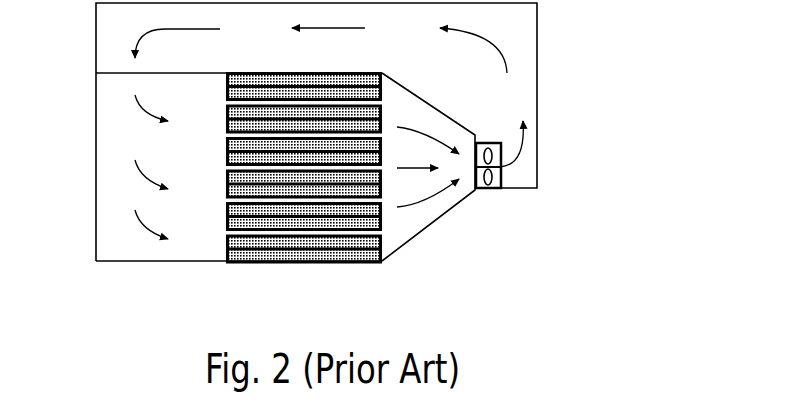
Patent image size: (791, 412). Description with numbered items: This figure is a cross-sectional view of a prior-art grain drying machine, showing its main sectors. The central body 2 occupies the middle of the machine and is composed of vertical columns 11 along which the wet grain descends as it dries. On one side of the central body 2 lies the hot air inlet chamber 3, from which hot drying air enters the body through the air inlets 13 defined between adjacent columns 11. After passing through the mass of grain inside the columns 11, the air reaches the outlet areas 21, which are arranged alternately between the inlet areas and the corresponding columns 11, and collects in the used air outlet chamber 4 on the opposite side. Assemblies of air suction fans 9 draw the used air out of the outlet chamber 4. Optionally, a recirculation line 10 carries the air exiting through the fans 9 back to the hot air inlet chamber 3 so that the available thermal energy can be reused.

The recirculation line 10 is at (538, 34).
The air inlets 13 is at (225, 135).
The hot air inlet chamber 3 is at (155, 265).
The central body 2 is at (336, 198).
The vertical columns 11 is at (304, 87).
The outlet areas 21 is at (304, 119).
The used air outlet chamber 4 is at (403, 224).
The air suction fans 9 is at (485, 190).